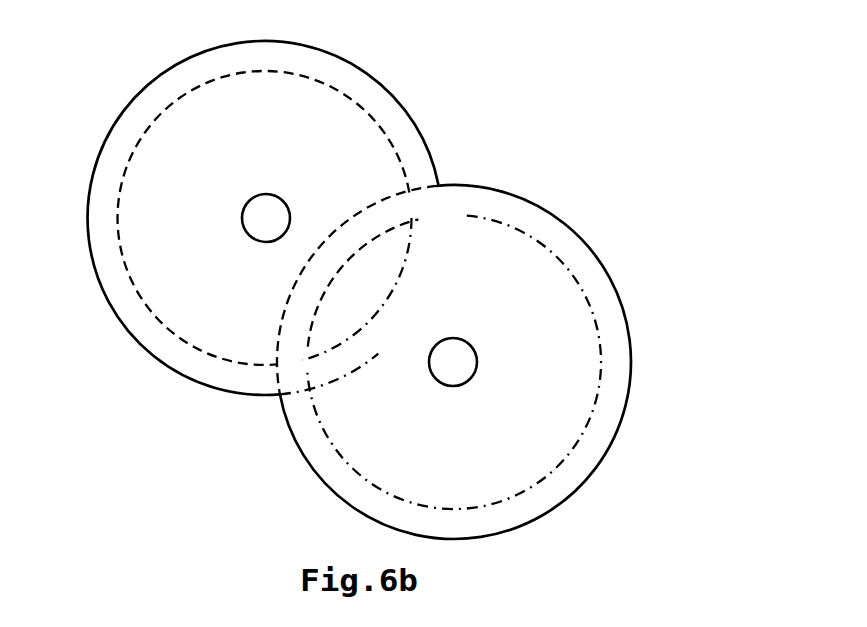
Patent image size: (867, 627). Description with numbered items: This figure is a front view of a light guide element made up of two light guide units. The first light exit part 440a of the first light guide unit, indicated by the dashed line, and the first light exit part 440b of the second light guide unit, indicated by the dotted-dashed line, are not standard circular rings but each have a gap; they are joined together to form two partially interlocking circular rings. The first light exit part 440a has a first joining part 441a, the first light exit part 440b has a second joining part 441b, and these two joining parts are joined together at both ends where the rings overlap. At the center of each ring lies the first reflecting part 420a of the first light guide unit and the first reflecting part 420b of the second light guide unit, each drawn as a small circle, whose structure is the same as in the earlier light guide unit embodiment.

The first light exit part of the first light guide unit 440a is at (377, 108).
The first light exit part of the second light guide unit 440b is at (607, 342).
The first joining part 441a is at (330, 240).
The second joining part 441b is at (373, 355).
The first reflecting part of the first light guide unit 420a is at (243, 235).
The first reflecting part of the second light guide unit 420b is at (458, 387).